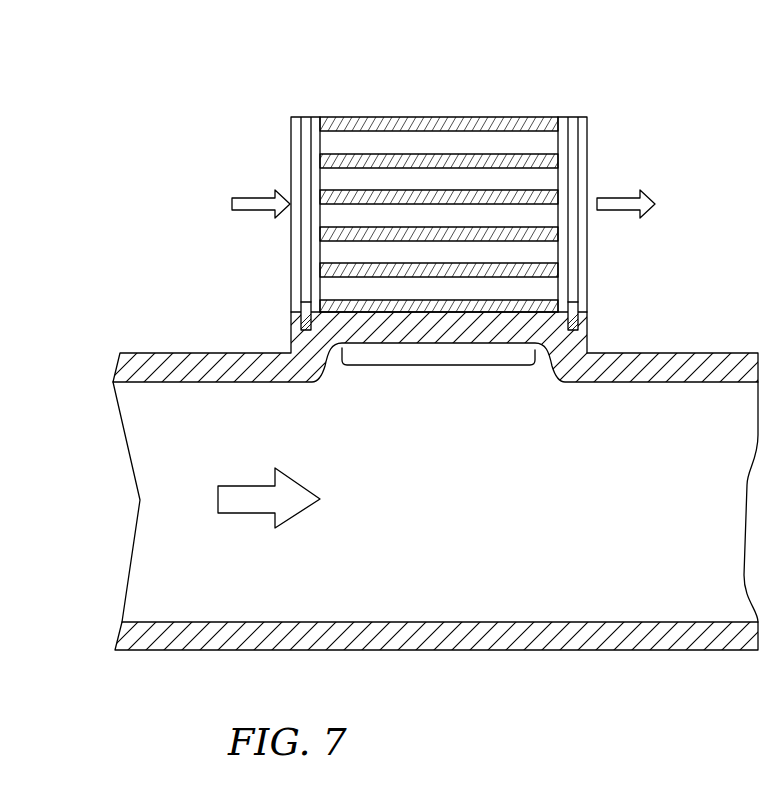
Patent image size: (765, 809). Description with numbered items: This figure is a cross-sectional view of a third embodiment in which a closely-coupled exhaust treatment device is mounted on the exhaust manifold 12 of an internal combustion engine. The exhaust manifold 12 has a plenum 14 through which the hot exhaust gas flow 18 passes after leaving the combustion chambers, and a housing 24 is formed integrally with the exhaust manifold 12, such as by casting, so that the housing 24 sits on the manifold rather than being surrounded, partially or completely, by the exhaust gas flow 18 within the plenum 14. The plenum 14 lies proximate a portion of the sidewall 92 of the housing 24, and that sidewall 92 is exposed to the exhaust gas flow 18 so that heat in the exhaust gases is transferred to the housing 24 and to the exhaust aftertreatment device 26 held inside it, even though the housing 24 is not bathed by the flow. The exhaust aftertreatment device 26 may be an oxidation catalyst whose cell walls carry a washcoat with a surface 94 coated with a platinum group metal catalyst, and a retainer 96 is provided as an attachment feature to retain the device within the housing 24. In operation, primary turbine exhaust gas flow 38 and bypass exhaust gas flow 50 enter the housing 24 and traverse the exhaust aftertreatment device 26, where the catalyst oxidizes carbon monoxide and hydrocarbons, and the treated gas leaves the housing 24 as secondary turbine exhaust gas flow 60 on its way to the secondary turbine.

The exhaust manifold 12 is at (116, 367).
The plenum 14 is at (412, 593).
The exhaust gas flow 18 is at (248, 497).
The housing 24 is at (587, 255).
The exhaust aftertreatment device 26 is at (365, 117).
The primary turbine exhaust gas flow 38 is at (244, 164).
The bypass exhaust gas flow 50 is at (250, 205).
The secondary turbine exhaust gas flow 60 is at (620, 202).
The sidewall 92 is at (437, 365).
The surface 94 is at (527, 190).
The retainer 96 is at (298, 305).